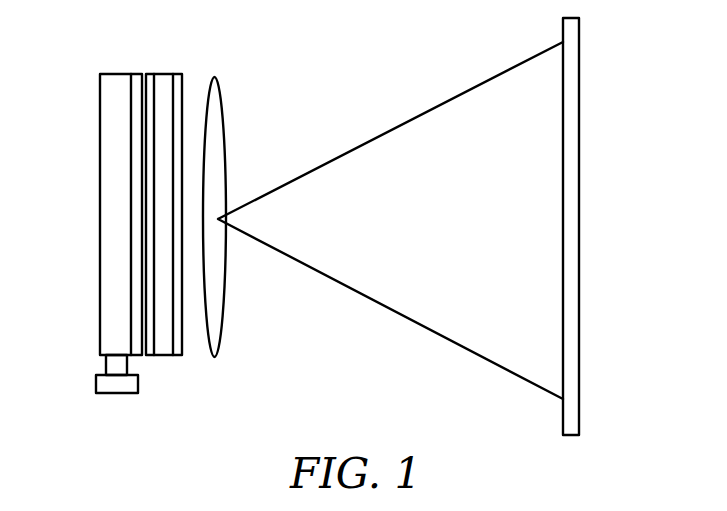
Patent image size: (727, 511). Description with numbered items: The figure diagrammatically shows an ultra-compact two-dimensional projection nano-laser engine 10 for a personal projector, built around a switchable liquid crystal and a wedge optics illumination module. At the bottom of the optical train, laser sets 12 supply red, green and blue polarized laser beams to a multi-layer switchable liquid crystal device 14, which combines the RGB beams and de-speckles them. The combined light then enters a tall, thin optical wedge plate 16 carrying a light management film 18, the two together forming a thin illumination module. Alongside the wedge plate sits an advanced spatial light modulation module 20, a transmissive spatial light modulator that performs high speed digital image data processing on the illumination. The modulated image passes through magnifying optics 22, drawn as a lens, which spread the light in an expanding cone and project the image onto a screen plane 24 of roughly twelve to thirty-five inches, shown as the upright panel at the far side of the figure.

The 2-D projection nano-laser engine 10 is at (119, 45).
The laser sets 12 is at (117, 395).
The multi-layer switchable liquid crystal device 14 is at (105, 365).
The optical wedge plate 16 is at (100, 203).
The light management film 18 is at (142, 108).
The advanced spatial light modulation module 20 is at (167, 73).
The magnifying optics 22 is at (223, 118).
The screen plane 24 is at (579, 132).